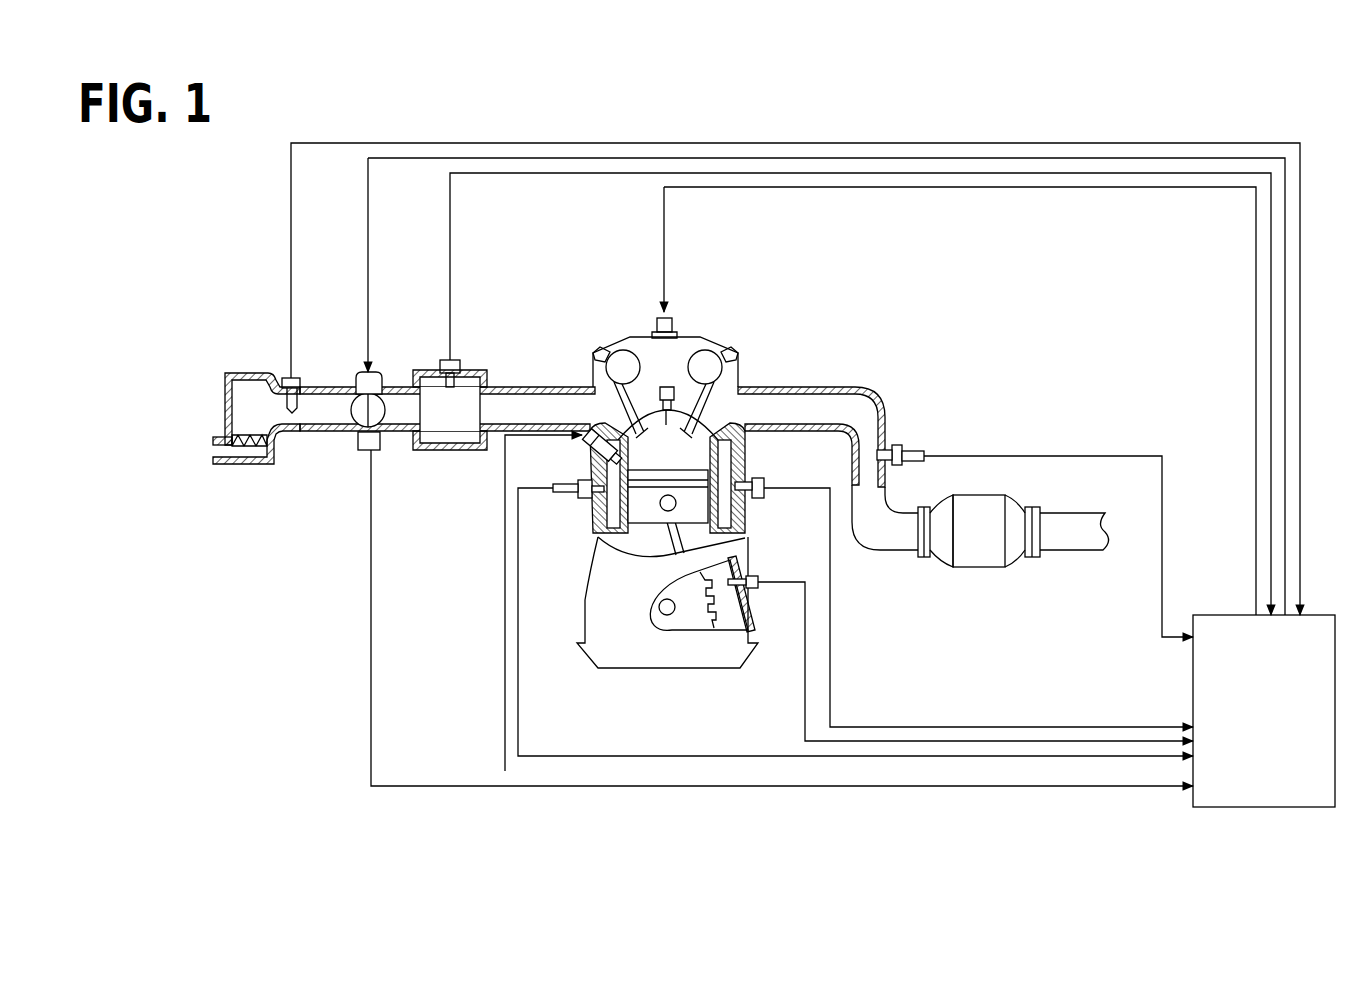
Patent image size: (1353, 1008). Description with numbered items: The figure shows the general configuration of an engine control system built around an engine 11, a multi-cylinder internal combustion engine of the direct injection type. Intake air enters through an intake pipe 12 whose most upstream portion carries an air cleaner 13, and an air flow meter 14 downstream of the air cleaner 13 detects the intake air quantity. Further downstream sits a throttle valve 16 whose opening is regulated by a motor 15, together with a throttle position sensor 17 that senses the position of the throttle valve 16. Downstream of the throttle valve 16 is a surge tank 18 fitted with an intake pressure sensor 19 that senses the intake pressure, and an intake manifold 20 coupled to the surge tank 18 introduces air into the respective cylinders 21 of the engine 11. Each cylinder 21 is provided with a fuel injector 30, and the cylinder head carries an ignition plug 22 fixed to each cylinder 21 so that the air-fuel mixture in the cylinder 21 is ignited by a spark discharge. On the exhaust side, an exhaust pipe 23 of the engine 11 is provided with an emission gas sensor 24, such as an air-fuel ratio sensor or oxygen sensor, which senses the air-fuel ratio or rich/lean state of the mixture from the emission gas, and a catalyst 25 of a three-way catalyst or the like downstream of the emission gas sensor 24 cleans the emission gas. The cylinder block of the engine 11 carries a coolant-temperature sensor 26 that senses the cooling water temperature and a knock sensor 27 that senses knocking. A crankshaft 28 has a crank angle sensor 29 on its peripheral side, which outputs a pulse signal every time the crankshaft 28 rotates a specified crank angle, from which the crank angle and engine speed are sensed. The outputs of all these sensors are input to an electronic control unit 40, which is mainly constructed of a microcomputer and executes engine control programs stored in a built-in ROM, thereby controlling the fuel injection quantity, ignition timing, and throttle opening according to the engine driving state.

The engine 11 is at (710, 335).
The intake pipe 12 is at (335, 387).
The air cleaner 13 is at (248, 445).
The air flow meter 14 is at (285, 377).
The motor 15 is at (357, 372).
The throttle valve 16 is at (362, 412).
The throttle position sensor 17 is at (382, 452).
The surge tank 18 is at (450, 450).
The intake pressure sensor 19 is at (443, 360).
The intake manifold 20 is at (532, 387).
The cylinder 21 is at (757, 466).
The ignition plug 22 is at (677, 367).
The exhaust pipe 23 is at (863, 388).
The emission gas sensor 24 is at (900, 443).
The catalyst 25 is at (978, 495).
The coolant-temperature sensor 26 is at (572, 502).
The knock sensor 27 is at (760, 502).
The crankshaft 28 is at (667, 615).
The crank angle sensor 29 is at (757, 588).
The fuel injector 30 is at (585, 448).
The electronic control unit (ECU) 40 is at (1225, 615).